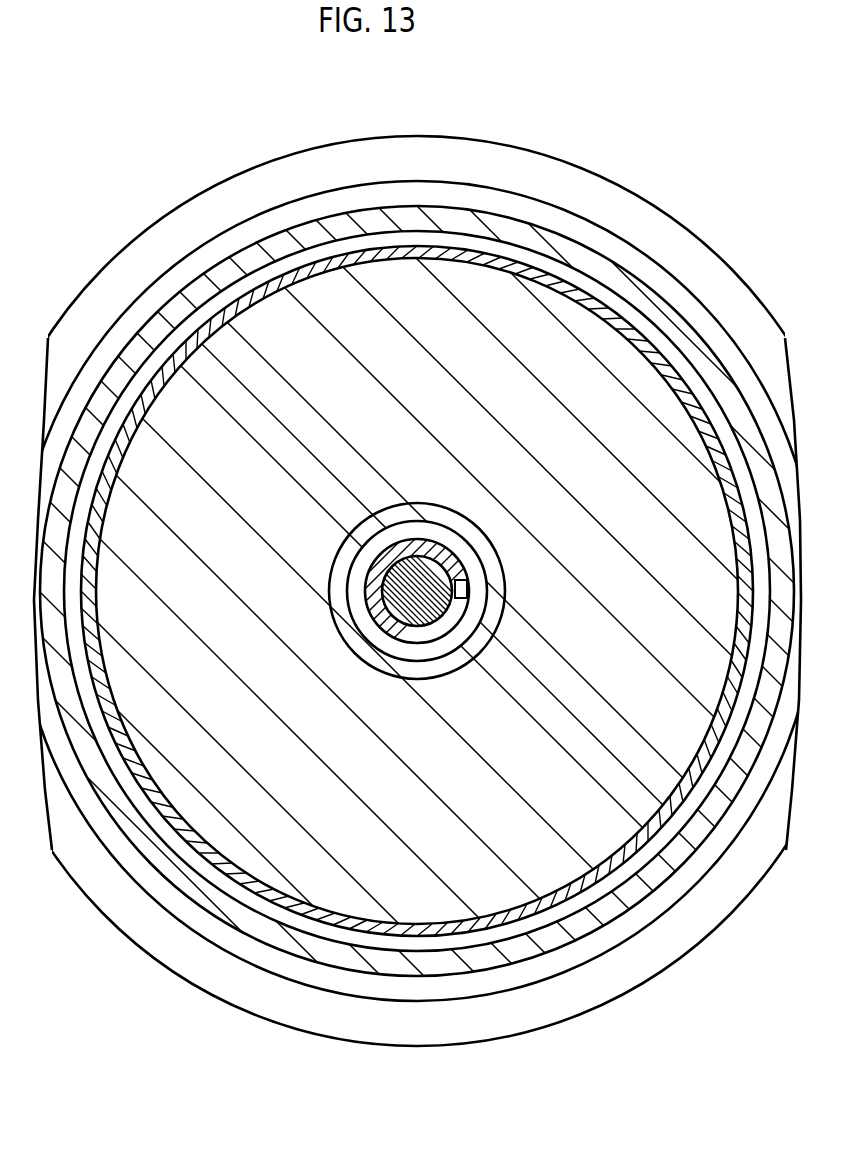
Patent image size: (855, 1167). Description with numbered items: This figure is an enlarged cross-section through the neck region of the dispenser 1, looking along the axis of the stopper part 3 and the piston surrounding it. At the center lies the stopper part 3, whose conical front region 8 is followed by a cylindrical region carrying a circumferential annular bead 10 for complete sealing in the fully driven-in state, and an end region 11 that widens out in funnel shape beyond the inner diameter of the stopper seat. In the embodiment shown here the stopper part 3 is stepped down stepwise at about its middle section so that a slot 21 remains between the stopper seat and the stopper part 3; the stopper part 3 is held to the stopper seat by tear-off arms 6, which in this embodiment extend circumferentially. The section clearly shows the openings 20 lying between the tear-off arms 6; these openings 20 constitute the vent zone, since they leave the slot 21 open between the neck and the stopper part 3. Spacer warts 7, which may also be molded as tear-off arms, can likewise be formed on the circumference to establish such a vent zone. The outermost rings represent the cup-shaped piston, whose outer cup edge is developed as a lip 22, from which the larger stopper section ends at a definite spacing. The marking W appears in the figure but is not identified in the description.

The dispenser 1 is at (417, 549).
The stopper part 3 is at (427, 583).
The tear-off arms 6 is at (427, 546).
The spacer warts 7 is at (286, 786).
The front region 8 is at (417, 368).
The annular bead 10 is at (330, 565).
The end region 11 is at (160, 268).
The openings 20 is at (561, 766).
The slot 21 is at (333, 312).
The lip 22 is at (490, 604).
The wall thickness W is at (300, 858).